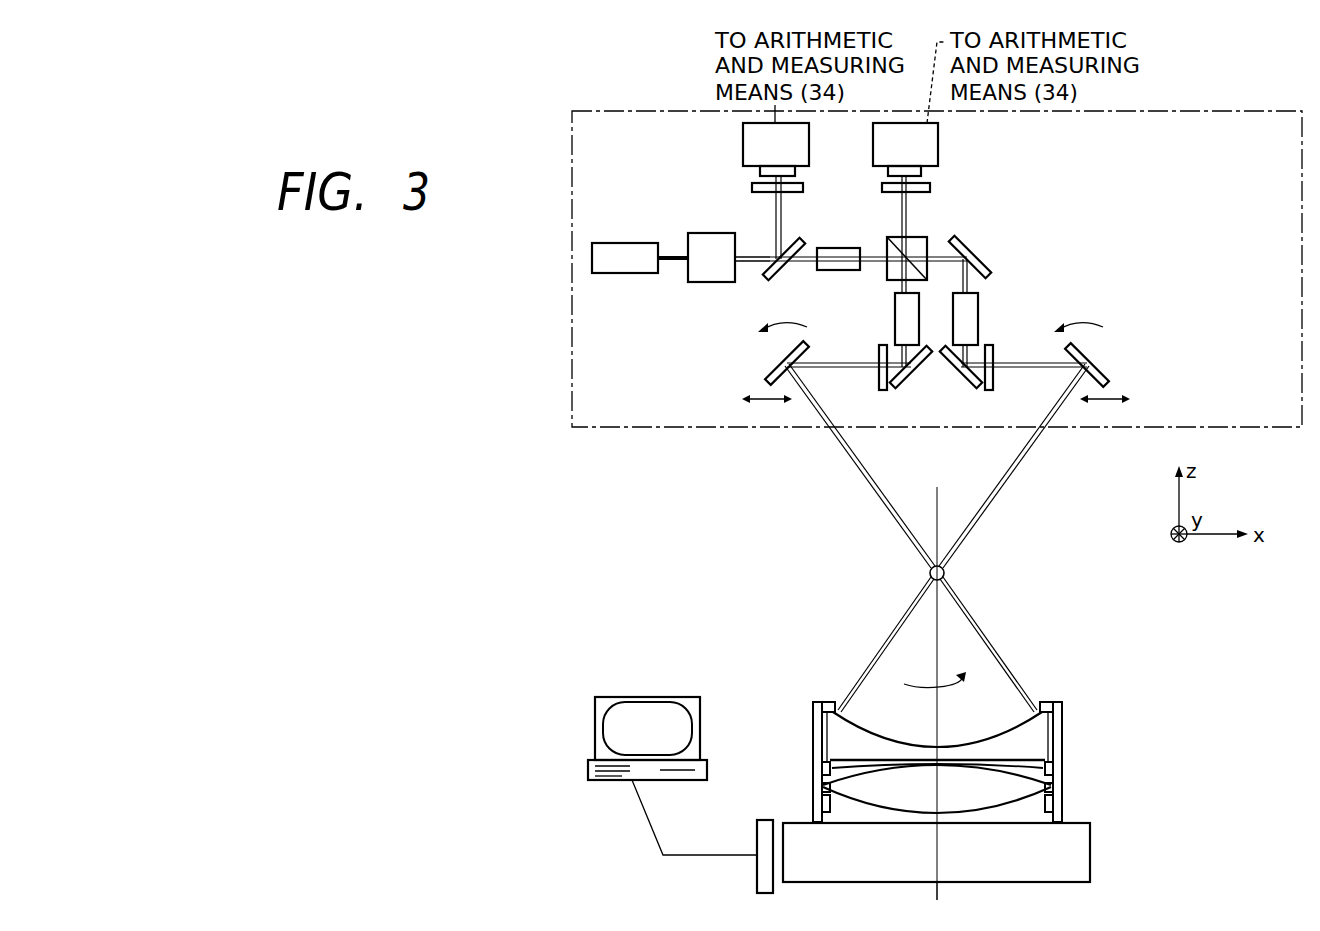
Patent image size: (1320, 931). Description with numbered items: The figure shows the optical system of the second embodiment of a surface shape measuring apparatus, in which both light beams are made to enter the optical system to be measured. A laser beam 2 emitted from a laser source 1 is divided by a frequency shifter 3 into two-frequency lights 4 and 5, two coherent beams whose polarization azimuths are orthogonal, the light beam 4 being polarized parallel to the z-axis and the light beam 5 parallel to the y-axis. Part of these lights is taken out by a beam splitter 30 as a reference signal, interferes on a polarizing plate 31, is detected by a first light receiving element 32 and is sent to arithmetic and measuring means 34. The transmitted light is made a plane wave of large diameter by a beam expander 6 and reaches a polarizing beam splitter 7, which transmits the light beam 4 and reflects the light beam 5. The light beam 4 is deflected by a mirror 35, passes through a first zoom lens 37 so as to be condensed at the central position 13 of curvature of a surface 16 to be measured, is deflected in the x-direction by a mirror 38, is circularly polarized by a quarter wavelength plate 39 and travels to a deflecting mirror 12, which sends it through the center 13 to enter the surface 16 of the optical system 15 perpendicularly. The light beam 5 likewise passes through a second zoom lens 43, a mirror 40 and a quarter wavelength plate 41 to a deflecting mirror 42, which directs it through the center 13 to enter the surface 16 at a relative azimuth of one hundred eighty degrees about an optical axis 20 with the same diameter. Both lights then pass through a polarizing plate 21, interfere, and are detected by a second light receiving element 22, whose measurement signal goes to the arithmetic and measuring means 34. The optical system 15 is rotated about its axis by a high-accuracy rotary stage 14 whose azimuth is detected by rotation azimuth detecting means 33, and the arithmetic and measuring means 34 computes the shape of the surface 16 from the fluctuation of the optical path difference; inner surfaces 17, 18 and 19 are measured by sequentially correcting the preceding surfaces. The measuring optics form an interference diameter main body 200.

The laser source 1 is at (604, 245).
The laser beam 2 is at (673, 256).
The frequency shifter 3 is at (701, 282).
The light beam 4 is at (757, 255).
The light beam 5 is at (744, 263).
The beam expander 6 is at (836, 271).
The polarizing beam splitter 7 is at (893, 238).
The deflecting mirror 12 is at (1092, 356).
The central position of curvature 13 is at (945, 574).
The rotary stage 14 is at (1091, 852).
The optical system to be measured 15 is at (1062, 705).
The surface to be measured 16 is at (1033, 743).
The surface 17 is at (1033, 766).
The surface 18 is at (1033, 787).
The surface 19 is at (1033, 798).
The optical axis 20 is at (940, 896).
The polarizing plate 21 is at (930, 188).
The second light receiving element 22 is at (938, 144).
The beam splitter 30 is at (799, 246).
The polarizing plate 31 is at (752, 187).
The first light receiving element 32 is at (743, 138).
The rotation azimuth detecting means 33 is at (757, 872).
The arithmetic and measuring means 34 is at (606, 700).
The mirror 35 is at (976, 249).
The first zoom lens 37 is at (978, 311).
The mirror 38 is at (960, 379).
The quarter wavelength plate 39 is at (995, 380).
The mirror 40 is at (912, 380).
The quarter wavelength plate 41 is at (879, 380).
The deflecting mirror 42 is at (780, 356).
The second zoom lens 43 is at (895, 312).
The interference diameter main body 200 is at (1283, 147).